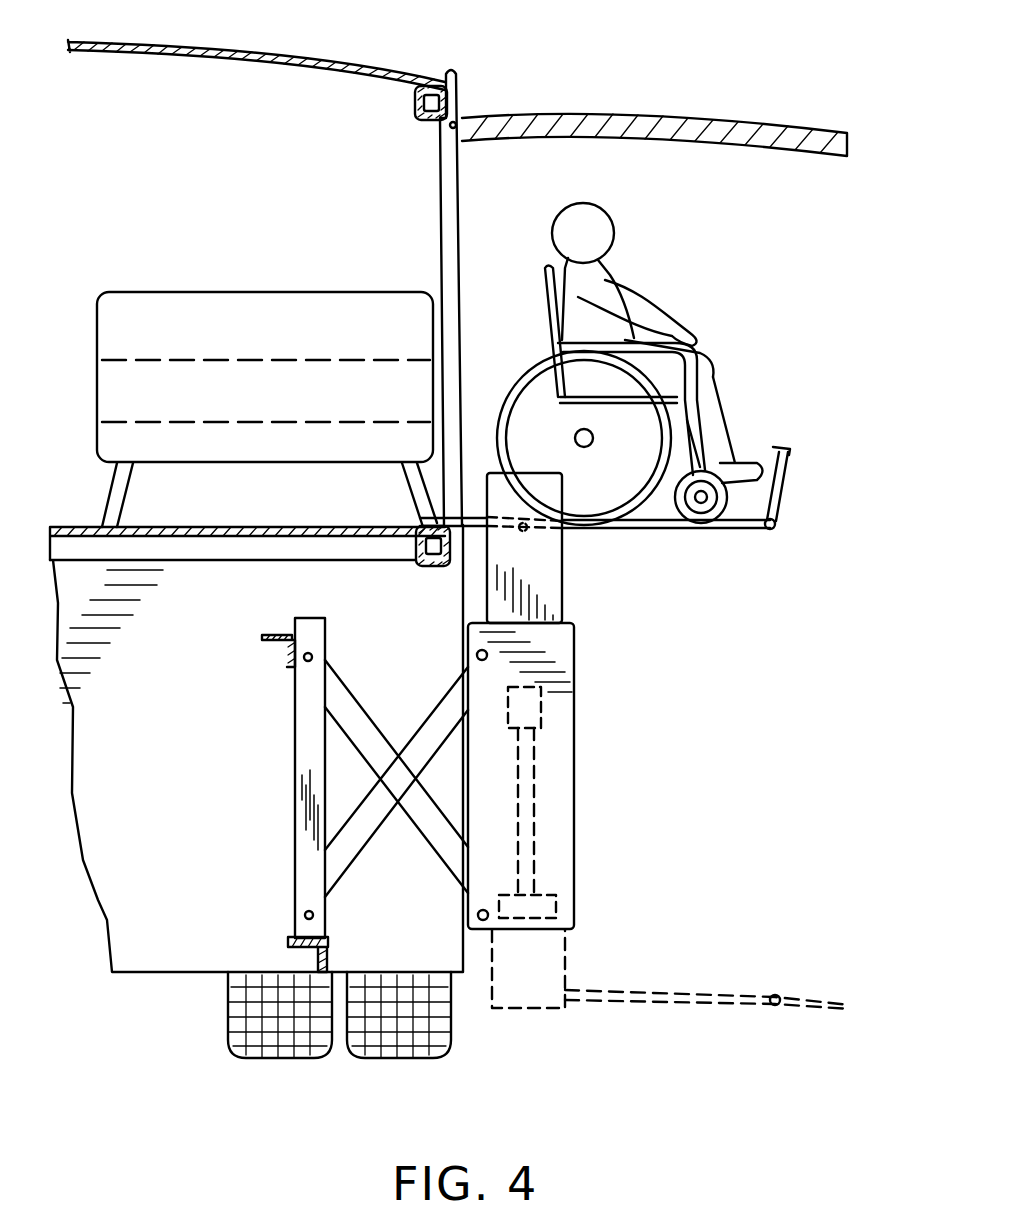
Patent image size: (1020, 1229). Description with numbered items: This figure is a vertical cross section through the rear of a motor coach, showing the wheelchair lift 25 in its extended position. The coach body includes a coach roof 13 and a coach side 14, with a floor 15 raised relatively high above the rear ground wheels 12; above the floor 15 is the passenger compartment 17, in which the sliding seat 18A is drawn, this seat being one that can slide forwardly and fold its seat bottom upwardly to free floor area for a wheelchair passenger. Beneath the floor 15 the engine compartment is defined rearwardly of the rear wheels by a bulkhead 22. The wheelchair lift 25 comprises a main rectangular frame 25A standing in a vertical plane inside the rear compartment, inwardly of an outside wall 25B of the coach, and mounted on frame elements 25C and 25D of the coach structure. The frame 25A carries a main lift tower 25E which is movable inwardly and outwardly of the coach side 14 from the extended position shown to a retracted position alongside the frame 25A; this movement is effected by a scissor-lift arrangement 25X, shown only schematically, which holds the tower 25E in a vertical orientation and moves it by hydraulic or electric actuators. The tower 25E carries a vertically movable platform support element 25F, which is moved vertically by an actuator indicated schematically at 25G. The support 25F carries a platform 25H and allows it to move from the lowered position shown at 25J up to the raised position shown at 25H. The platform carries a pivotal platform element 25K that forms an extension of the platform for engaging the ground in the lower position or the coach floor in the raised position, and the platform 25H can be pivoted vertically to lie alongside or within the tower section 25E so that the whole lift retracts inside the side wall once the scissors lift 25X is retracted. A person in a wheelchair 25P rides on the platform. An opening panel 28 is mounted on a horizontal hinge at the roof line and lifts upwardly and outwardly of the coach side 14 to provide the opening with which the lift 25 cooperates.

The rear ground wheels 12 is at (222, 1020).
The coach roof 13 is at (266, 46).
The coach side 14 is at (462, 206).
The floor 15 is at (90, 527).
The passenger compartment 17 is at (227, 370).
The sliding seat 18A is at (265, 338).
The bulkhead 22 is at (118, 950).
The wheelchair lift 25 is at (612, 782).
The main rectangular frame 25A is at (296, 760).
The outside wall 25B is at (420, 552).
The frame element 25C is at (780, 450).
The frame element 25D is at (290, 943).
The main lift tower 25E is at (570, 690).
The platform support element 25F is at (555, 573).
The actuator 25G is at (540, 826).
The platform 25H is at (660, 531).
The lowered position of platform 25J is at (655, 993).
The pivotal platform element 25K is at (440, 520).
The person in wheelchair 25P is at (690, 306).
The scissor-lift arrangement 25X is at (402, 725).
The opening panel 28 is at (697, 118).